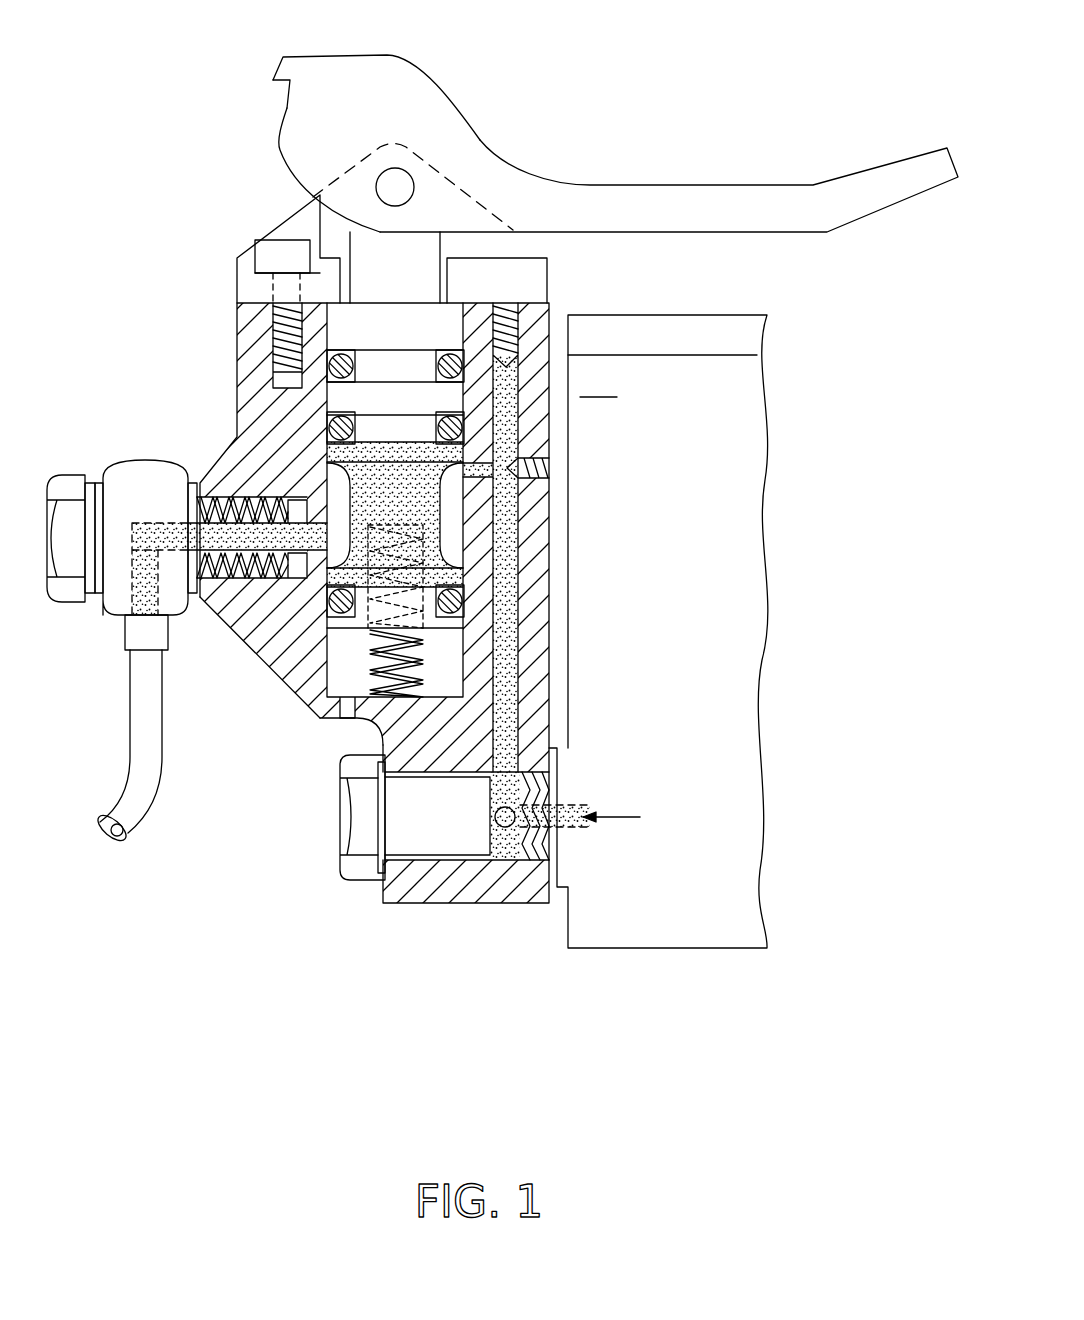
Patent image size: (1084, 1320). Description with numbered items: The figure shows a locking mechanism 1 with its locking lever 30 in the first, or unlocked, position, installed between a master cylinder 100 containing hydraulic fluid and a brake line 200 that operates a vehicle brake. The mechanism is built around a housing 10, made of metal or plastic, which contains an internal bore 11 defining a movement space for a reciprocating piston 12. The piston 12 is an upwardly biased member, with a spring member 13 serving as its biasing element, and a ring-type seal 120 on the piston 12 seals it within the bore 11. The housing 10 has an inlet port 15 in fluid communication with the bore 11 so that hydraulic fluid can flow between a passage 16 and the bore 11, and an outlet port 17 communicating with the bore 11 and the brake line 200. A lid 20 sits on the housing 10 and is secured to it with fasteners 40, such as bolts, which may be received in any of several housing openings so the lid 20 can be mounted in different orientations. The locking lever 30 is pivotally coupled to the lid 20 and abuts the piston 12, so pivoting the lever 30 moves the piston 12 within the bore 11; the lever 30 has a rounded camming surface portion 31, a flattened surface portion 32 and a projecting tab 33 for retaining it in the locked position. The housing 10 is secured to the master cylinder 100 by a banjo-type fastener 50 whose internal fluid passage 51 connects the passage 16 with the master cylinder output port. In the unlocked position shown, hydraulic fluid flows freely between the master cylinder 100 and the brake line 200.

The locking mechanism 1 is at (152, 118).
The housing 10 is at (248, 648).
The internal bore 11 is at (297, 708).
The reciprocating piston 12 is at (355, 403).
The spring member 13 is at (332, 730).
The inlet port 15 is at (472, 457).
The passage 16 is at (519, 597).
The outlet port 17 is at (232, 633).
The lid 20 is at (236, 288).
The locking lever 30 is at (713, 180).
The rounded camming surface portion 31 is at (281, 162).
The flattened surface portion 32 is at (281, 105).
The projecting tab 33 is at (279, 66).
The fasteners 40 is at (278, 254).
The fastener 50 is at (360, 880).
The internal fluid passage 51 is at (500, 857).
The master cylinder 100 is at (658, 631).
The ring-type seal 120 is at (323, 603).
The brake line 200 is at (130, 707).